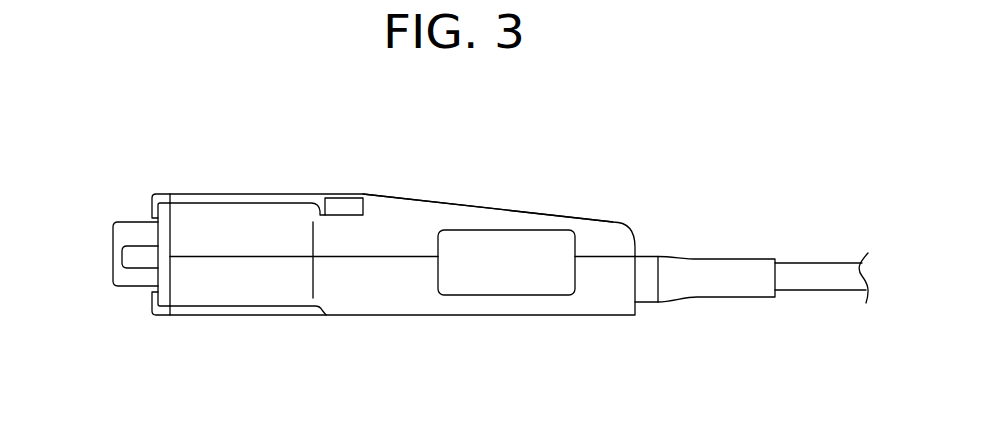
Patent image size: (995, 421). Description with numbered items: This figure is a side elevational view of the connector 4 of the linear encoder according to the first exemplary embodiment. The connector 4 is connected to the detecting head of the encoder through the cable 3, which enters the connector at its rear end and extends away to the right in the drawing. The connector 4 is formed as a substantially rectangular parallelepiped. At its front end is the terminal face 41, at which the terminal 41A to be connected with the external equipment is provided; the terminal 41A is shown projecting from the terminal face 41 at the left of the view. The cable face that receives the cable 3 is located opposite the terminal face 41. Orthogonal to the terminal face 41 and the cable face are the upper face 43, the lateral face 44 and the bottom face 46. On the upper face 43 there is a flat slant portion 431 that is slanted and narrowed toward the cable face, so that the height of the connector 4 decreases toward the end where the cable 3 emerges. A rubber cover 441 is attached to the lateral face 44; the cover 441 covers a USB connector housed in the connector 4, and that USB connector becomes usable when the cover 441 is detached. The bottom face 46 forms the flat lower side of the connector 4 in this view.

The cable 3 is at (825, 290).
The connector 4 is at (648, 149).
The terminal face 41 is at (152, 291).
The terminal 41A is at (117, 273).
The upper face 43 is at (258, 193).
The flat slant portion 431 is at (530, 210).
The lateral face 44 is at (603, 305).
The rubber cover 441 is at (505, 287).
The bottom face 46 is at (378, 315).